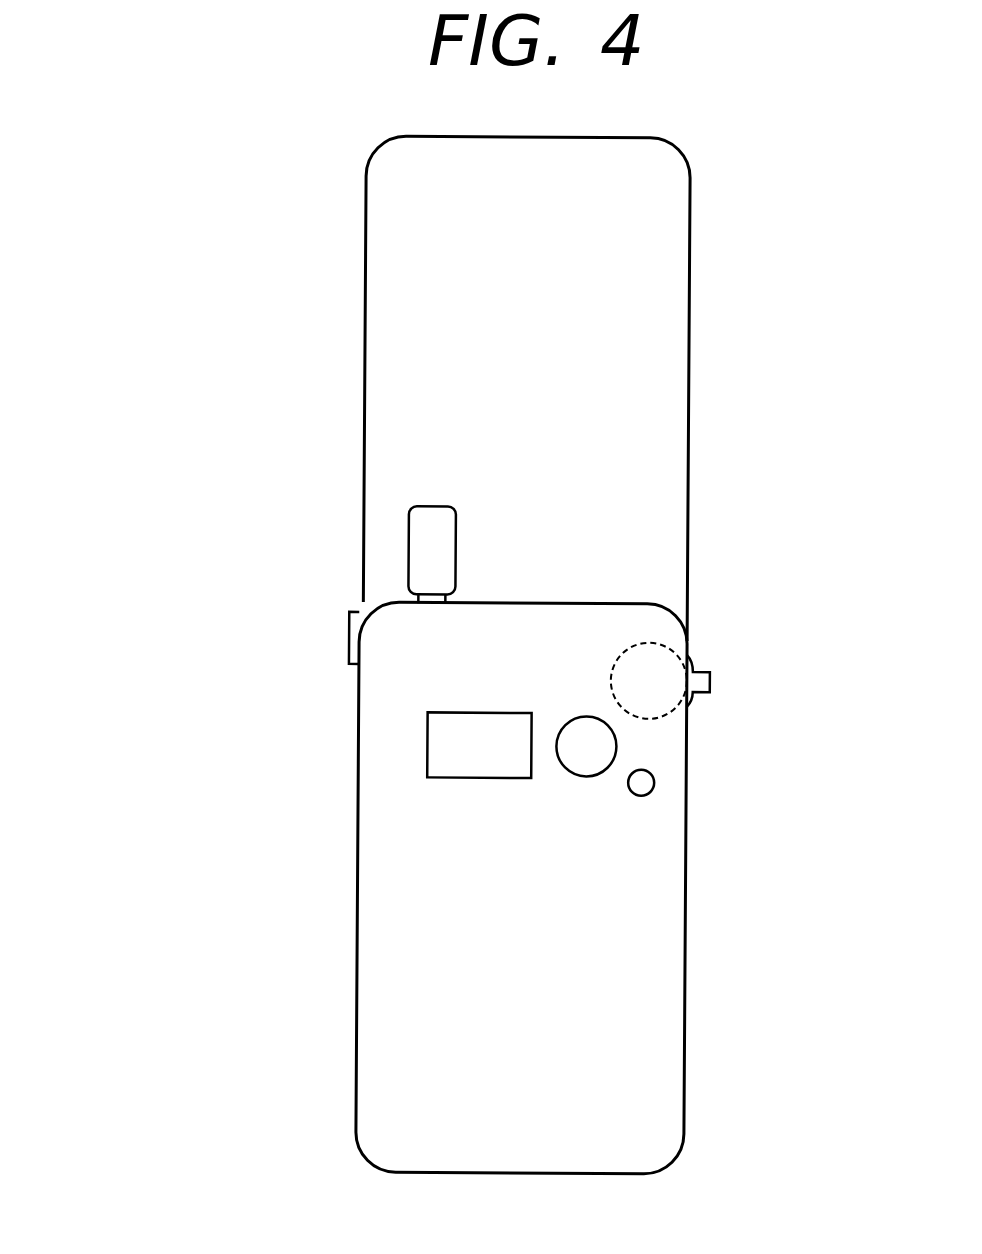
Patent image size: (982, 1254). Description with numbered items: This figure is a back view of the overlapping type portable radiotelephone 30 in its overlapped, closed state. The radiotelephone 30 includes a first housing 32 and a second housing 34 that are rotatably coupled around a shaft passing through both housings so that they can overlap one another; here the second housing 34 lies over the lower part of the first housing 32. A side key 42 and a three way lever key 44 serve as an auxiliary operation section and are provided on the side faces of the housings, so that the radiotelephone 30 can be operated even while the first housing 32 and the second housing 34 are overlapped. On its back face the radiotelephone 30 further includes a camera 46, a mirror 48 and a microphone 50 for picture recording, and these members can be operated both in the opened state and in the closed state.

The overlapping type portable radiotelephone 30 is at (180, 881).
The first housing 32 is at (378, 334).
The second housing 34 is at (372, 990).
The side key 42 is at (350, 638).
The three way lever key 44 is at (710, 681).
The camera 46 is at (607, 748).
The mirror 48 is at (440, 746).
The microphone 50 is at (654, 783).